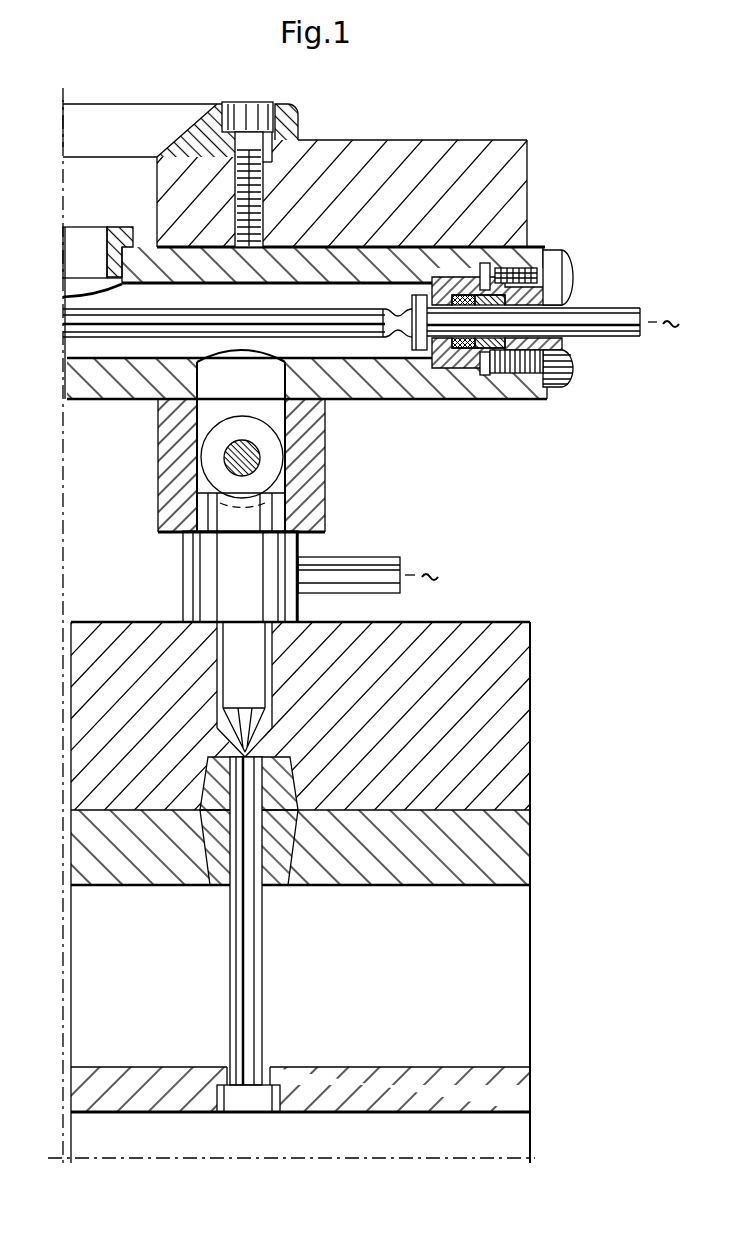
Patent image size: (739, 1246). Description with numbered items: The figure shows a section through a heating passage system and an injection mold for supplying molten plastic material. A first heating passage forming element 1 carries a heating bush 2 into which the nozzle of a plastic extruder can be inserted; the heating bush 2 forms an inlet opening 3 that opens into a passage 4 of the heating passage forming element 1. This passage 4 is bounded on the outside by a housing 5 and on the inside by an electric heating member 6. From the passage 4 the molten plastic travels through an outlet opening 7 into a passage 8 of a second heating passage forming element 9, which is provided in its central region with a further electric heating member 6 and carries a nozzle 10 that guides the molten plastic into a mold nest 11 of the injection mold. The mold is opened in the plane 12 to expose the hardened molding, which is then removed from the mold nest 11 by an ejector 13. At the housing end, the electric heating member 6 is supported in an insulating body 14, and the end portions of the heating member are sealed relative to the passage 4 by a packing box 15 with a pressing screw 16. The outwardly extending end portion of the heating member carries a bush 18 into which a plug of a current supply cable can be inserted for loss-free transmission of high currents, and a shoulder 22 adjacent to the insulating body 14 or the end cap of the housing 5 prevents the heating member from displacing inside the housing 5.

The heating passage forming element 1 is at (470, 238).
The heating bush 2 is at (118, 228).
The inlet opening 3 is at (77, 262).
The passage 4 is at (372, 353).
The housing 5 is at (455, 385).
The electric heating member 6 is at (75, 320).
The outlet opening 7 is at (277, 387).
The passage 8 is at (205, 412).
The second heating passage forming element 9 is at (152, 502).
The nozzle 10 is at (282, 548).
The mold nest 11 is at (264, 790).
The plane 12 is at (530, 810).
The ejector 13 is at (250, 987).
The insulating body 14 is at (470, 363).
The packing box 15 is at (493, 268).
The pressing screw 16 is at (540, 272).
The bush 18 is at (614, 330).
The shoulder 22 is at (420, 352).